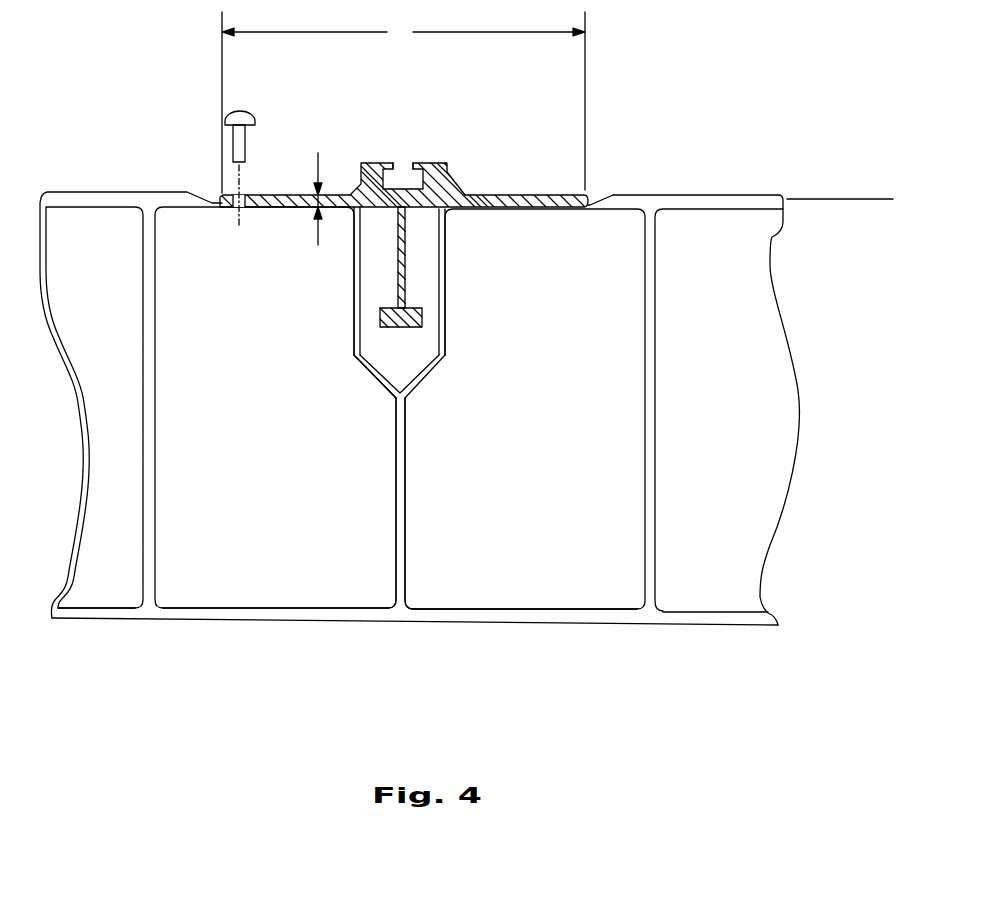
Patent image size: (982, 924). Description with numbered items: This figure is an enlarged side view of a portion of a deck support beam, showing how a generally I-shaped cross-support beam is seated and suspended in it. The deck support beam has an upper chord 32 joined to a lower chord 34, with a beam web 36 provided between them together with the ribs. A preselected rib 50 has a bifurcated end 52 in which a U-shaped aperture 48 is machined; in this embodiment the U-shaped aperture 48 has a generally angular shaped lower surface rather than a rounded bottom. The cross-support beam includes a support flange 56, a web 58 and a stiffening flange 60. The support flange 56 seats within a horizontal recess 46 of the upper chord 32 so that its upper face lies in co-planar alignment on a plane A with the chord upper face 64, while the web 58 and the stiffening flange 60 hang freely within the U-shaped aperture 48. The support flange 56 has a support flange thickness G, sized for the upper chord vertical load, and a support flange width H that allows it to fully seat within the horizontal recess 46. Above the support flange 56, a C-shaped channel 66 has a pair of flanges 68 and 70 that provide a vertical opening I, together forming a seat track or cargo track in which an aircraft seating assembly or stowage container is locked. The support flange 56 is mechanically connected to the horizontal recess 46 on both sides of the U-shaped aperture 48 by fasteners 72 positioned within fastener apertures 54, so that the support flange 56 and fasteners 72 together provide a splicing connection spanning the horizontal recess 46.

The upper chord 32 is at (95, 195).
The lower chord 34 is at (102, 615).
The beam web 36 is at (248, 575).
The horizontal recess 46 is at (595, 202).
The U-shaped aperture 48 is at (418, 358).
The preselected rib 50 is at (398, 543).
The bifurcated end 52 is at (375, 382).
The fastener apertures 54 is at (232, 208).
The support flange 56 is at (468, 200).
The web 58 is at (403, 262).
The stiffening flange 60 is at (413, 318).
The chord upper face 64 is at (712, 203).
The C-shaped channel 66 is at (447, 163).
The flange 68 is at (422, 165).
The flange 70 is at (385, 167).
The fasteners 72 is at (250, 118).
The vertical opening I is at (405, 177).
The support flange thickness G is at (309, 214).
The support flange width H is at (403, 102).
The plane A is at (840, 198).